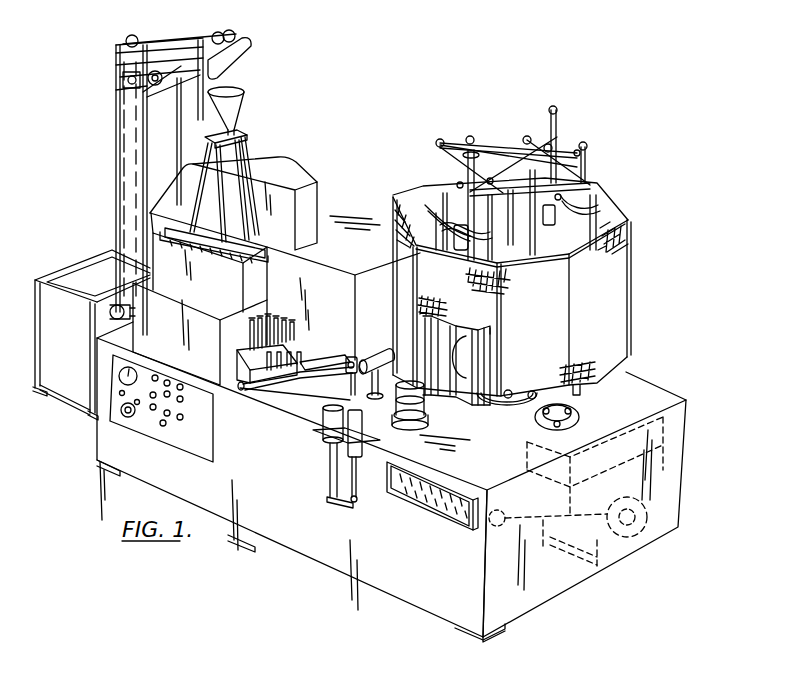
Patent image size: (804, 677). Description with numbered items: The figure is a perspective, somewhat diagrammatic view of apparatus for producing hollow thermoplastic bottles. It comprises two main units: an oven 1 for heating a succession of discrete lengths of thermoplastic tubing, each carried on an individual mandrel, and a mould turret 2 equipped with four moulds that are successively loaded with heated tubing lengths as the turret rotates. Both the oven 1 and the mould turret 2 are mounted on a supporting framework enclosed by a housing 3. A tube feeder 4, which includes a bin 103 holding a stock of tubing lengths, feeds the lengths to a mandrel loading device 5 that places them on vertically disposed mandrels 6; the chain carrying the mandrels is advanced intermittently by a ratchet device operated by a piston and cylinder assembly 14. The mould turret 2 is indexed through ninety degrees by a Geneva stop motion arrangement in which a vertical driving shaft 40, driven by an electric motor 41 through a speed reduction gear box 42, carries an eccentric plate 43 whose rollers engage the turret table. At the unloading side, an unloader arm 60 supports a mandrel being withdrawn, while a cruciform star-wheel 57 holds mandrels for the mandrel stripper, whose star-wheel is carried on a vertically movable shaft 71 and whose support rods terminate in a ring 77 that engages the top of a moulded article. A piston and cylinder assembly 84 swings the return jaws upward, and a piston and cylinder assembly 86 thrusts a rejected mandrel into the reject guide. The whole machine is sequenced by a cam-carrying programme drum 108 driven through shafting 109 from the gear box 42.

The oven 1 is at (285, 258).
The mould turret 2 is at (571, 125).
The housing 3 is at (630, 379).
The tube feeder 4 is at (116, 131).
The mandrel loading device 5 is at (223, 288).
The mandrels 6 is at (263, 330).
The piston and cylinder assembly 14 is at (114, 315).
The vertical driving shaft 40 is at (562, 432).
The electric motor 41 is at (647, 505).
The speed reduction gear box 42 is at (677, 437).
The eccentric plate 43 is at (533, 413).
The cruciform star-wheel 57 is at (413, 360).
The unloader arm 60 is at (425, 394).
The shaft 71 is at (330, 475).
The ring 77 is at (348, 360).
The piston and cylinder assembly 84 is at (267, 395).
The piston and cylinder assembly 86 is at (382, 361).
The bin 103 is at (97, 267).
The programme drum 108 is at (477, 535).
The shafting 109 is at (548, 540).